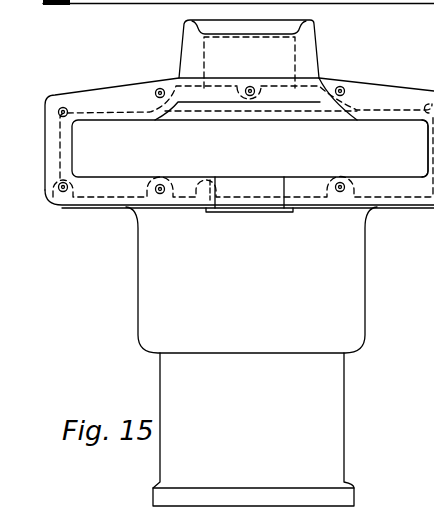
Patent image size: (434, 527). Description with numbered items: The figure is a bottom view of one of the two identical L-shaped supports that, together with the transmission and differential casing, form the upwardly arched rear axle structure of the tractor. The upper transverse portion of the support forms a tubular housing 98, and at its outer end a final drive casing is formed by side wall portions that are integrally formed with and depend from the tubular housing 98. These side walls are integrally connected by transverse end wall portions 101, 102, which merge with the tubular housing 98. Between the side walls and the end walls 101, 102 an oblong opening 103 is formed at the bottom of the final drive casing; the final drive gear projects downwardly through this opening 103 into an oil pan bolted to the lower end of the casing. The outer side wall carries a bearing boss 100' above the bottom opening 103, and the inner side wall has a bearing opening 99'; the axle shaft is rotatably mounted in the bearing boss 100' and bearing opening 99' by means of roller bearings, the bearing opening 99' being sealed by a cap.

The tubular housing 98 is at (344, 410).
The bearing opening 99' is at (249, 205).
The bearing boss 100' is at (271, 54).
The transverse wall portion 101 is at (426, 152).
The transverse wall portion 102 is at (63, 153).
The oblong opening 103 is at (262, 155).